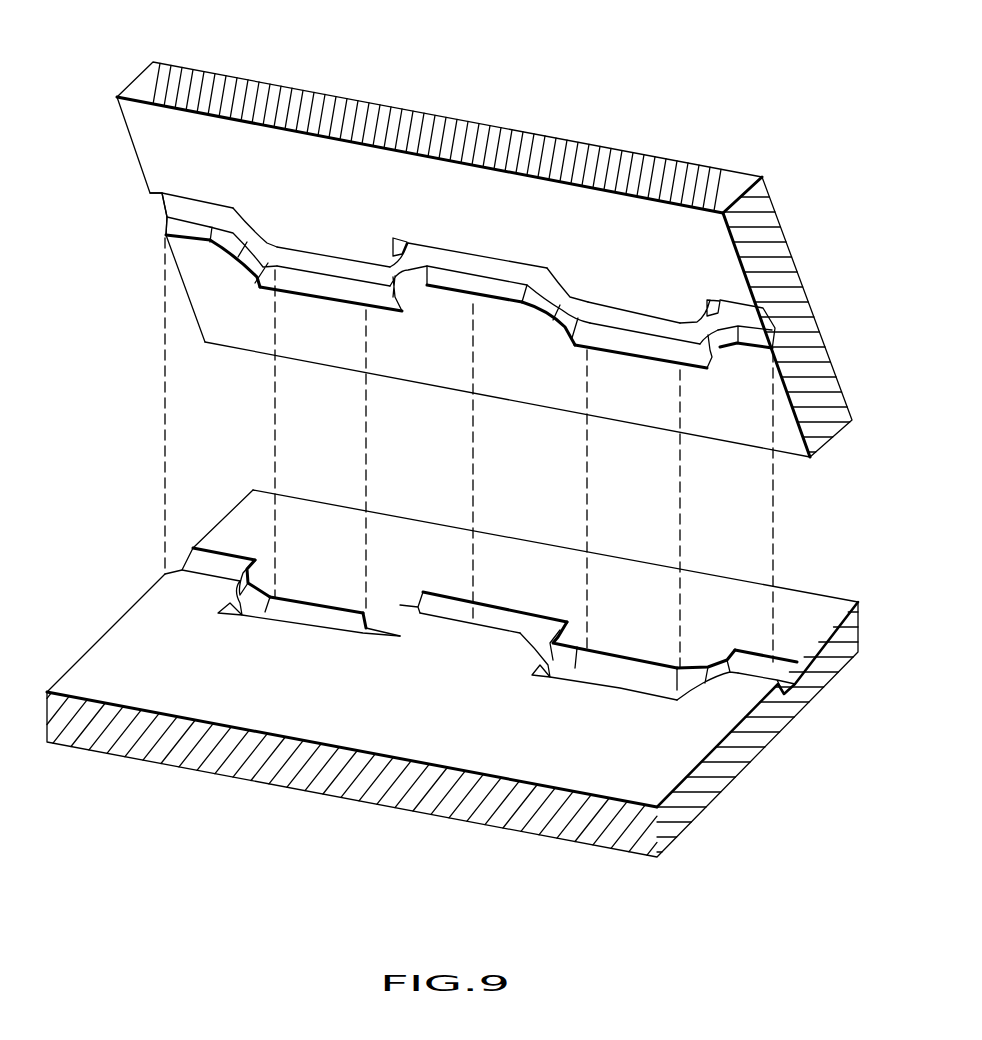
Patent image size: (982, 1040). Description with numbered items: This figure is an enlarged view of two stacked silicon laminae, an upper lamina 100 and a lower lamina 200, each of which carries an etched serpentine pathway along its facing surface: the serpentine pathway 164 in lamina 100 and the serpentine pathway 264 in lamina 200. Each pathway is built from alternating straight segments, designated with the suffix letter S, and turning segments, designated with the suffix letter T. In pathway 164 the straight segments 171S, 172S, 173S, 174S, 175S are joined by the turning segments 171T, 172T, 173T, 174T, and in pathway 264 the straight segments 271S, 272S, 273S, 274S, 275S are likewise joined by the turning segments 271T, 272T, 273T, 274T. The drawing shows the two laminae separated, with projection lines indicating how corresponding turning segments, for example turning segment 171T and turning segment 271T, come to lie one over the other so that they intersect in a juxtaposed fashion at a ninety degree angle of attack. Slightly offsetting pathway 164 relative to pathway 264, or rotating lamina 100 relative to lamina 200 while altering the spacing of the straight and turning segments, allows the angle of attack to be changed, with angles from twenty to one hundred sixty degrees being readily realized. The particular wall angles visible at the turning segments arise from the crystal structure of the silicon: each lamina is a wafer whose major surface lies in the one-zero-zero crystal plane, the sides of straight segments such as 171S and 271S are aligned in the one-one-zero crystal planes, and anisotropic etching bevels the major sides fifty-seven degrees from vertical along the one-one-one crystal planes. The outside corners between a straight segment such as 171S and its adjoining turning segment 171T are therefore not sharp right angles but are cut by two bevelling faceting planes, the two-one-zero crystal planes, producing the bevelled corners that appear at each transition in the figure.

The lamina 100 is at (137, 79).
The lamina 200 is at (160, 765).
The serpentine pathway 164 is at (157, 204).
The serpentine pathway 264 is at (175, 560).
The straight segment 171S is at (205, 215).
The turning segment 171T is at (257, 230).
The straight segment 172S is at (330, 263).
The turning segment 172T is at (418, 253).
The straight segment 173S is at (488, 263).
The turning segment 173T is at (572, 287).
The straight segment 174S is at (645, 320).
The turning segment 174T is at (728, 360).
The straight segment 175S is at (742, 317).
The straight segment 271S is at (222, 565).
The turning segment 271T is at (262, 578).
The straight segment 272S is at (312, 620).
The turning segment 272T is at (396, 642).
The straight segment 273S is at (490, 615).
The turning segment 273T is at (573, 638).
The straight segment 274S is at (630, 682).
The turning segment 274T is at (717, 688).
The straight segment 275S is at (758, 668).